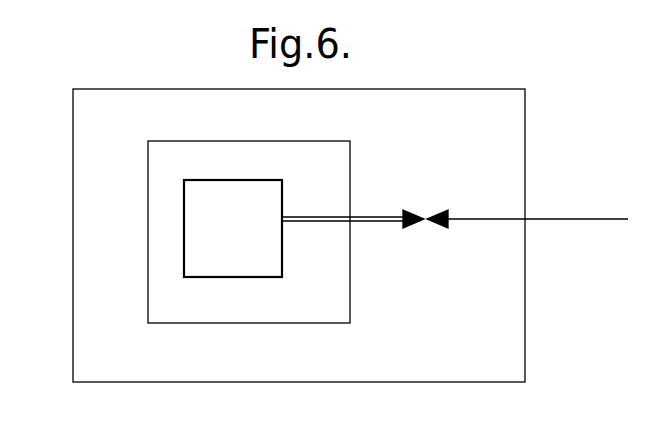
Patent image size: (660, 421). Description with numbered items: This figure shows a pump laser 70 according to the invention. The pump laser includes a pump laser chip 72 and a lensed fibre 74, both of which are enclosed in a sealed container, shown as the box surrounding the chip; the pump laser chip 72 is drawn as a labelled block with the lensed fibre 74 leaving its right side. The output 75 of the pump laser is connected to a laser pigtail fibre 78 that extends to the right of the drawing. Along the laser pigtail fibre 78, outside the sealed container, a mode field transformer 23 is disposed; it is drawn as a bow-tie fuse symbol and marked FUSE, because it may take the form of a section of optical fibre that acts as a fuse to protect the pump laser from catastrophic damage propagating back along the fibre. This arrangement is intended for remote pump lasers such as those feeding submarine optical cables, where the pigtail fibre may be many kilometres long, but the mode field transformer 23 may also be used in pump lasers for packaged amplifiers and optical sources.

The mode field radius transformer 23 is at (413, 212).
The pump laser 70 is at (197, 323).
The pump laser chip 72 is at (283, 190).
The lensed fibre 74 is at (288, 223).
The output 75 is at (352, 222).
The laser pigtail fibre 78 is at (570, 220).